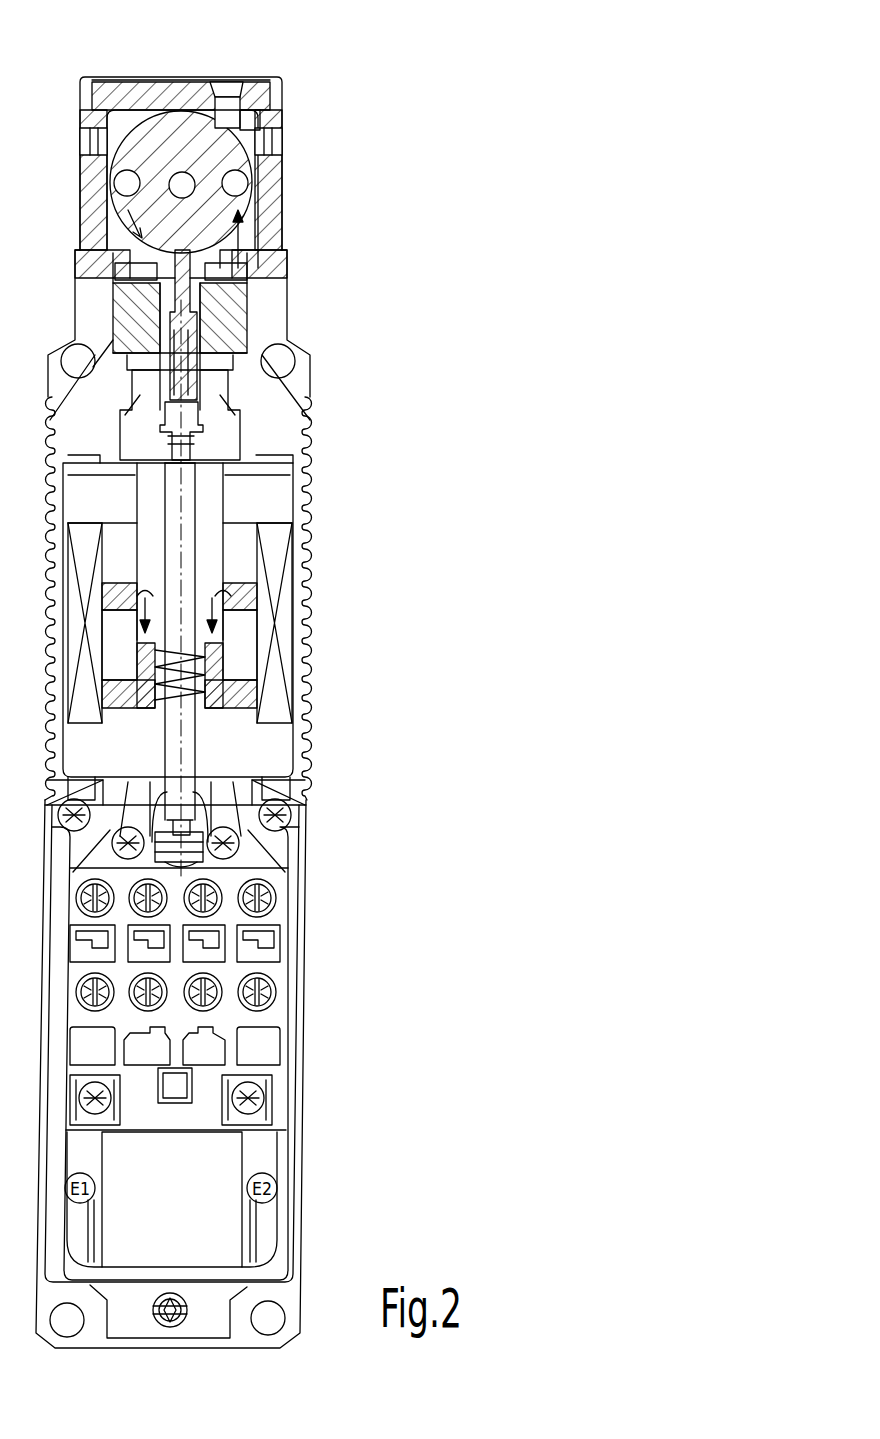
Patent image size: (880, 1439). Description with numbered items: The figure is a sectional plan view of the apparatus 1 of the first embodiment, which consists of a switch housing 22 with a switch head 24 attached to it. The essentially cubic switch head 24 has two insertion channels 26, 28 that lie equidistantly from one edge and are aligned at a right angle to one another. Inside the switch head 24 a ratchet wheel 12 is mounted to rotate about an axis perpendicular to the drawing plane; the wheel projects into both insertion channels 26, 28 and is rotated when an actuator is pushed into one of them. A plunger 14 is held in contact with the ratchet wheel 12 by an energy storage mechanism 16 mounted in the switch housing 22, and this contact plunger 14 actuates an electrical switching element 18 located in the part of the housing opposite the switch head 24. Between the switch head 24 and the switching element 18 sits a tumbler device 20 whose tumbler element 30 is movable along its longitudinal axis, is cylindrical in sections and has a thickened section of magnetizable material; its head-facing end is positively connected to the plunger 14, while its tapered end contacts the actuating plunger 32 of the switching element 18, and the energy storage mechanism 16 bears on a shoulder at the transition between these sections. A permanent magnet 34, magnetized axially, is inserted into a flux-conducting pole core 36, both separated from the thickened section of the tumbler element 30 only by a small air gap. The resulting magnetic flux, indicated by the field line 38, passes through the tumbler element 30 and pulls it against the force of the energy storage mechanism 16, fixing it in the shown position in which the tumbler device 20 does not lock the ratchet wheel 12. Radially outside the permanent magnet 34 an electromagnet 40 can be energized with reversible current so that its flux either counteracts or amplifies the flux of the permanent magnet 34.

The apparatus 1 is at (425, 86).
The ratchet wheel 12 is at (205, 206).
The plunger 14 is at (230, 378).
The energy storage mechanism 16 is at (188, 703).
The electrical switching element 18 is at (260, 1018).
The tumbler device 20 is at (343, 579).
The switch housing 22 is at (260, 320).
The switch head 24 is at (252, 265).
The insertion channel 26 is at (272, 148).
The insertion channel 28 is at (228, 92).
The tumbler element 30 is at (197, 498).
The actuating plunger 32 is at (190, 851).
The permanent magnet 34 is at (243, 649).
The pole core 36 is at (245, 698).
The field line 38 is at (212, 598).
The electromagnet 40 is at (277, 627).